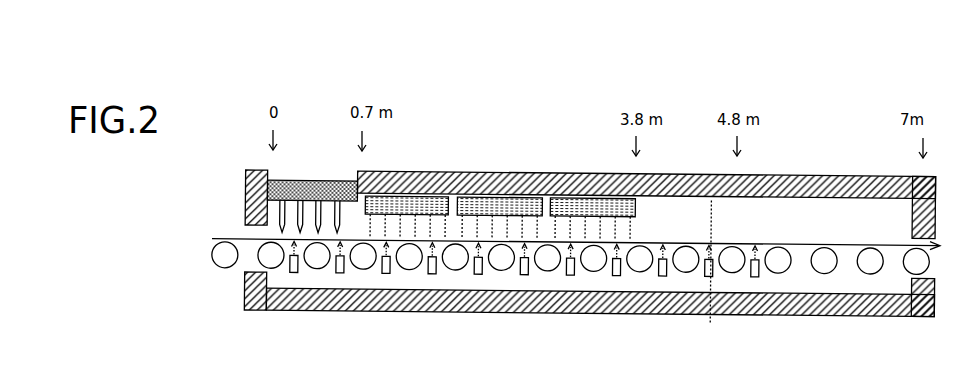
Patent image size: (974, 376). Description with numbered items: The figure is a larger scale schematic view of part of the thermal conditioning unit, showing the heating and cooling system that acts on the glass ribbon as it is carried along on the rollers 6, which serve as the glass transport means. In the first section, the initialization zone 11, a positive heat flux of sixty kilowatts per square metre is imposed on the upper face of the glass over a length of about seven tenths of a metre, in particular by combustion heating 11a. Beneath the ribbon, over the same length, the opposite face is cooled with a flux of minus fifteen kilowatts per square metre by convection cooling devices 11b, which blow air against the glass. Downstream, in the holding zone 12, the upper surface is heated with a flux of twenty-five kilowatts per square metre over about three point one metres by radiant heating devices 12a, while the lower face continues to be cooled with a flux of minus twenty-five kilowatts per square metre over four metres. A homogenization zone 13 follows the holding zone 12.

The rollers 6 is at (730, 262).
The initialization zone 11 is at (297, 180).
The combustion heating 11a is at (308, 217).
The convection cooling devices 11b is at (293, 272).
The holding zone 12 is at (478, 172).
The radiant heating devices 12a is at (490, 213).
The homogenization zone 13 is at (767, 175).